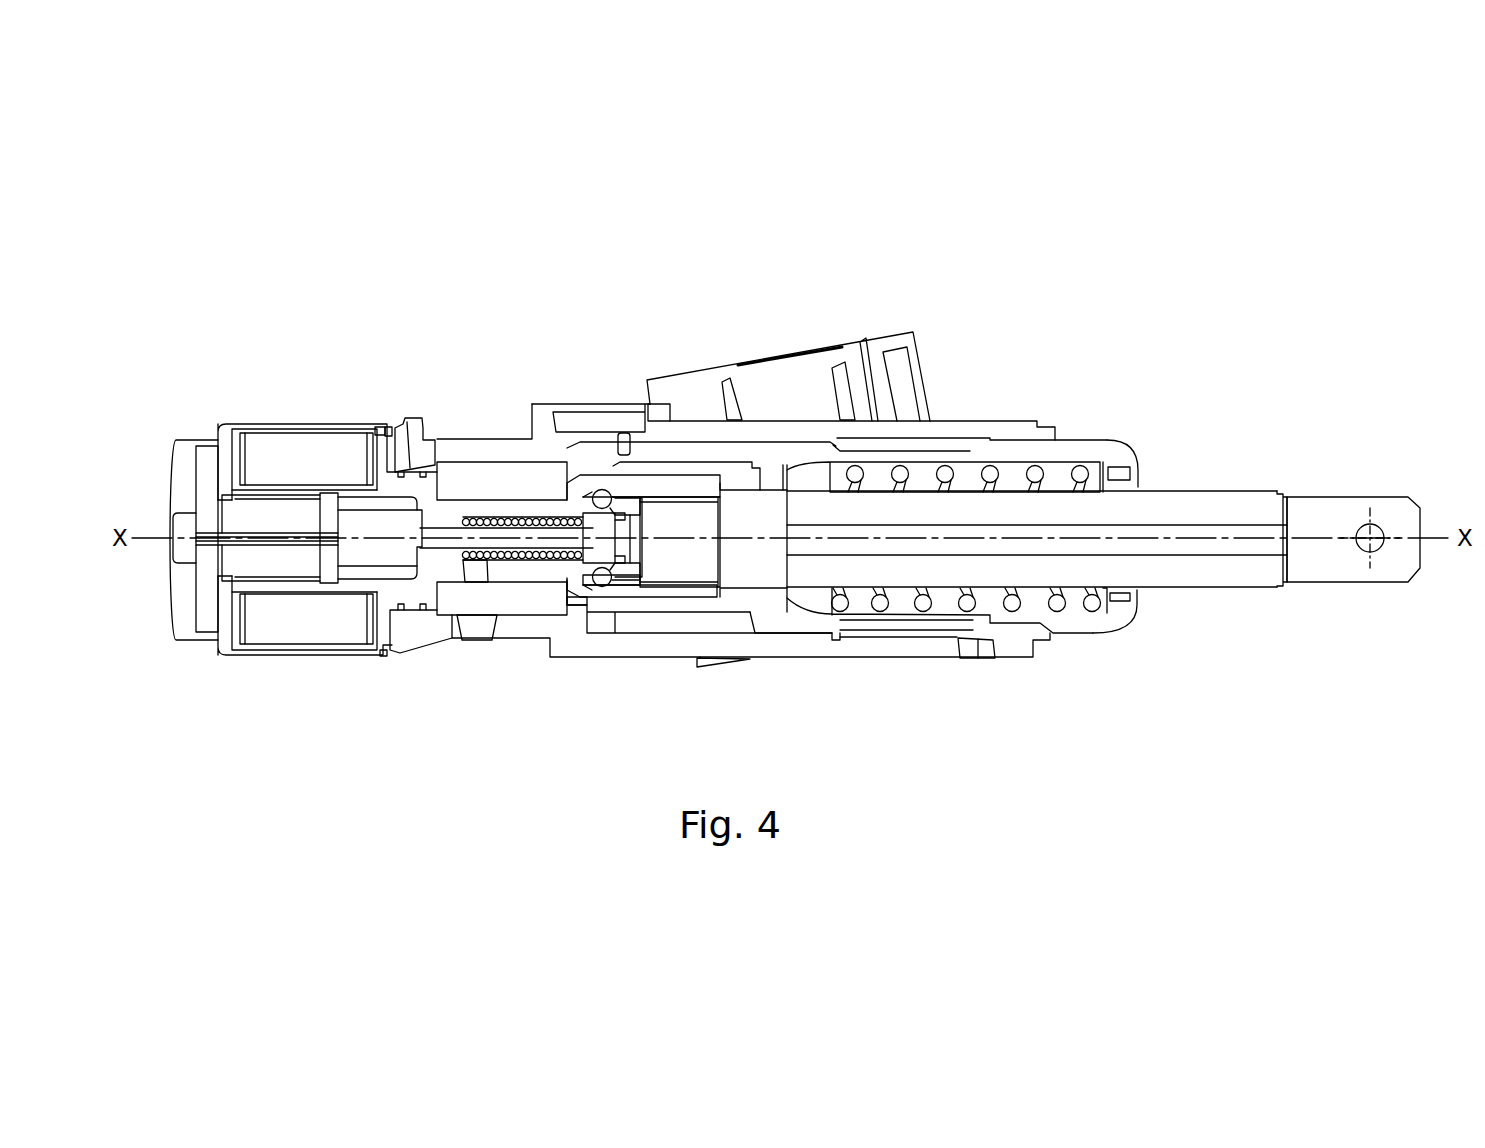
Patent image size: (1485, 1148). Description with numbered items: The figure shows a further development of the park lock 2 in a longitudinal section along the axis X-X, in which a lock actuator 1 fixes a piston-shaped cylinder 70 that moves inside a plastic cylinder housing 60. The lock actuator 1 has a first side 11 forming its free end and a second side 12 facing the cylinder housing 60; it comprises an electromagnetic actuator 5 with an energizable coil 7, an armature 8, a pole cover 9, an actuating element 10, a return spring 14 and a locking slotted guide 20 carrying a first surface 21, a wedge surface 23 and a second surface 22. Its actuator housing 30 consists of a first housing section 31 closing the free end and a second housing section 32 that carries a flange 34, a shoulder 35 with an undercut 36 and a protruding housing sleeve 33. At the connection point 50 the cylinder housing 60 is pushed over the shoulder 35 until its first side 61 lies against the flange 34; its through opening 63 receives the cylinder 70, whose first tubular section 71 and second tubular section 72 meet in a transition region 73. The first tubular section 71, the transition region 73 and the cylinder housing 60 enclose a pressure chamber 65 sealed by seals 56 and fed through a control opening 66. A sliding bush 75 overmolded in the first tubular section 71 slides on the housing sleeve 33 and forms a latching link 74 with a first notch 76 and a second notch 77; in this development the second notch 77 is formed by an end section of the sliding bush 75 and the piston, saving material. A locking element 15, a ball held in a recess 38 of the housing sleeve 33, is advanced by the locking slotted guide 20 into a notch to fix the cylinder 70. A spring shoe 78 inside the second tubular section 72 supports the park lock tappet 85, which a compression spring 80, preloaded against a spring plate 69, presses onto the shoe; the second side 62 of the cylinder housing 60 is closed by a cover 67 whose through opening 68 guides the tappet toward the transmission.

The lock actuator 1 is at (192, 408).
The park lock 2 is at (238, 240).
The electromagnetic actuator 5 is at (166, 662).
The coil 7 is at (300, 455).
The armature 8 is at (372, 570).
The pole cover 9 is at (273, 576).
The actuating element 10 is at (230, 573).
The first side 11 is at (215, 443).
The second side 12 is at (393, 657).
The return spring 14 is at (457, 617).
The locking element 15 is at (633, 482).
The locking slotted guide 20 is at (600, 587).
The first surface 21 is at (582, 586).
The second surface 22 is at (690, 590).
The wedge surface 23 is at (638, 584).
The actuator housing 30 is at (313, 733).
The first housing section 31 is at (280, 650).
The second housing section 32 is at (430, 592).
The housing sleeve 33 is at (500, 582).
The flange 34 is at (383, 435).
The shoulder 35 is at (410, 462).
The undercut 36 is at (430, 432).
The recess 38 is at (567, 505).
The connection point 50 is at (421, 390).
The seals 56 is at (604, 627).
The cylinder housing 60 is at (867, 648).
The first side 61 is at (390, 427).
The second side 62 is at (1037, 660).
The through opening 63 is at (935, 632).
The pressure chamber 65 is at (627, 625).
The control opening 66 is at (623, 447).
The cover 67 is at (1110, 620).
The through opening 68 is at (1130, 492).
The spring plate 69 is at (1110, 467).
The cylinder 70 is at (763, 460).
The first tubular section 71 is at (698, 477).
The second tubular section 72 is at (902, 458).
The transition region 73 is at (777, 460).
The latching link 74 is at (688, 588).
The sliding bush 75 is at (760, 460).
The first notch 76 is at (600, 492).
The second notch 77 is at (720, 590).
The spring shoe 78 is at (785, 582).
The compression spring 80 is at (1080, 470).
The park lock tappet 85 is at (1003, 507).